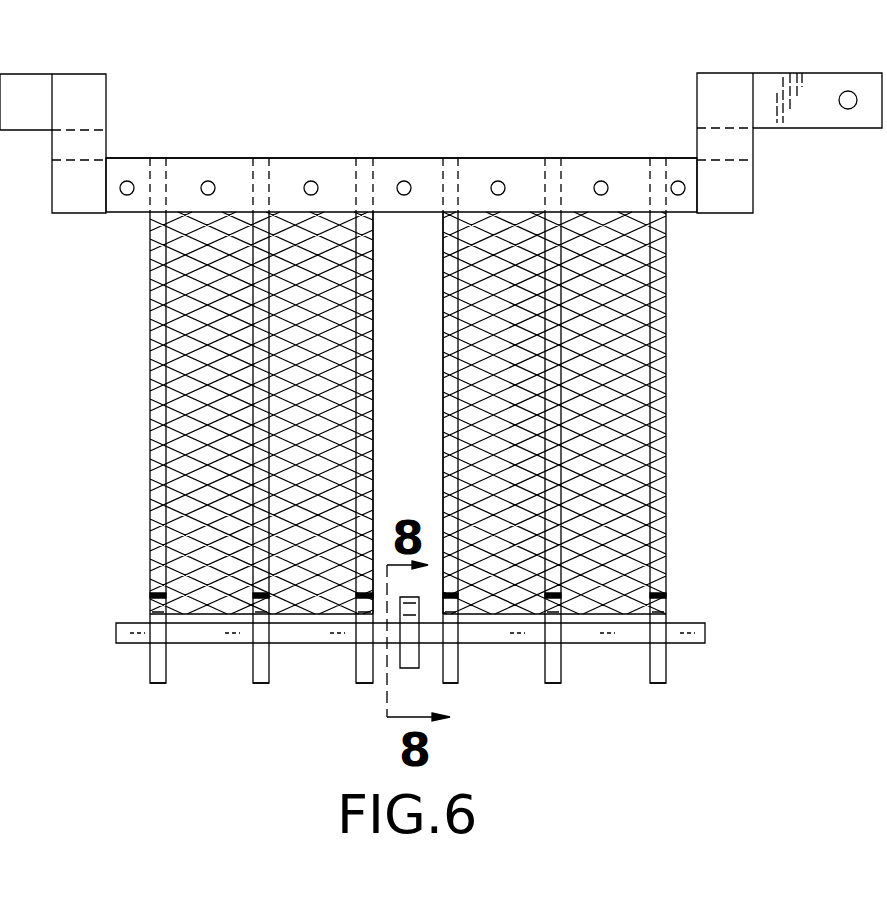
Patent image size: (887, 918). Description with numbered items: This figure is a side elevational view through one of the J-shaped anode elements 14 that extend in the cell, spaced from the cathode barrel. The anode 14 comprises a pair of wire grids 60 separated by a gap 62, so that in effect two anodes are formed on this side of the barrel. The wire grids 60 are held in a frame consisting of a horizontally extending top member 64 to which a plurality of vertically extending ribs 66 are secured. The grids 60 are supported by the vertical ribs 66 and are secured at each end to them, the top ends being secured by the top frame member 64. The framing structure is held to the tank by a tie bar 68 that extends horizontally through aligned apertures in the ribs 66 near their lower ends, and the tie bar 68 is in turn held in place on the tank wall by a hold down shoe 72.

The anode element 14 is at (388, 157).
The top member 64 is at (177, 168).
The gap 62 is at (420, 228).
The wire grid 60 is at (178, 325).
The rib 66 is at (660, 463).
The tie bar 68 is at (685, 630).
The hold down shoe 72 is at (412, 658).